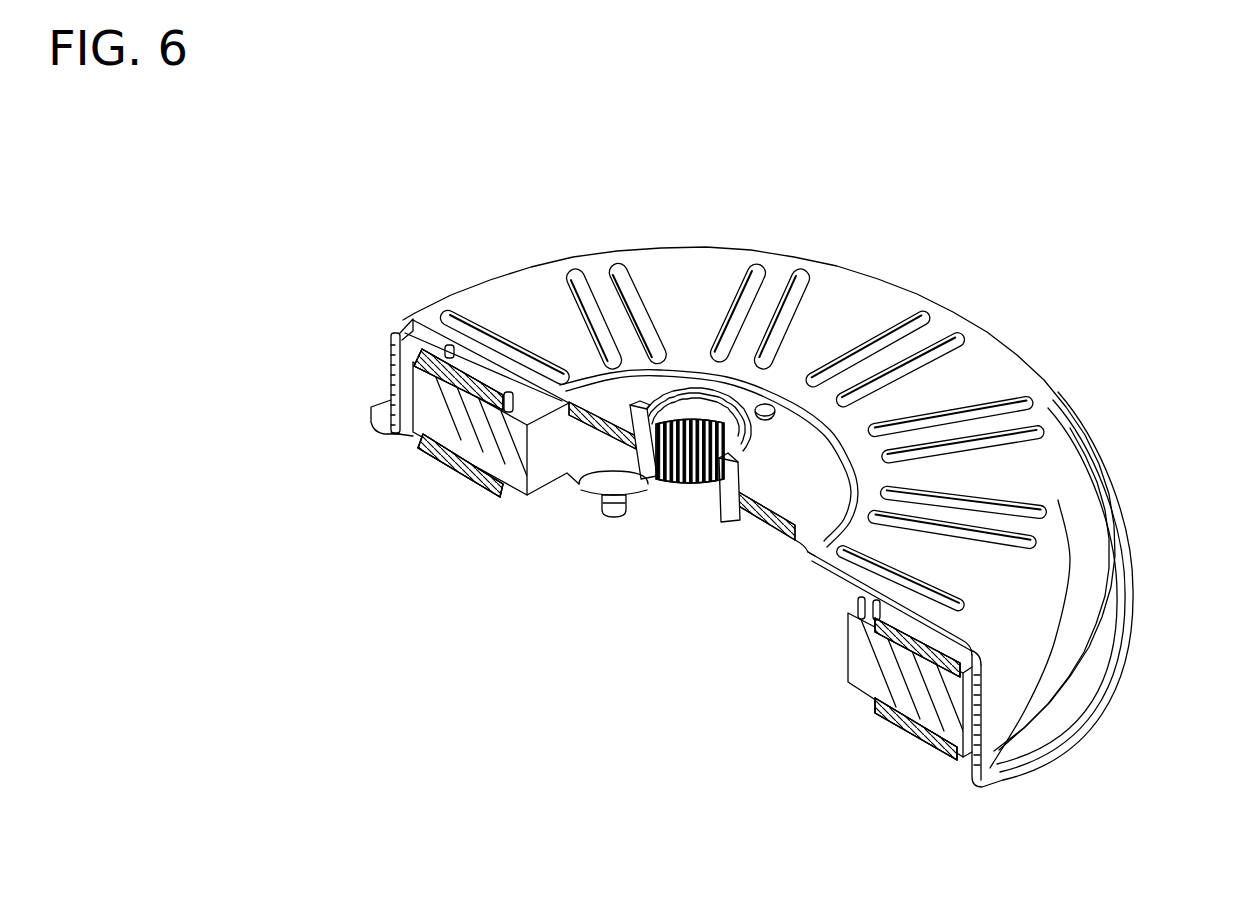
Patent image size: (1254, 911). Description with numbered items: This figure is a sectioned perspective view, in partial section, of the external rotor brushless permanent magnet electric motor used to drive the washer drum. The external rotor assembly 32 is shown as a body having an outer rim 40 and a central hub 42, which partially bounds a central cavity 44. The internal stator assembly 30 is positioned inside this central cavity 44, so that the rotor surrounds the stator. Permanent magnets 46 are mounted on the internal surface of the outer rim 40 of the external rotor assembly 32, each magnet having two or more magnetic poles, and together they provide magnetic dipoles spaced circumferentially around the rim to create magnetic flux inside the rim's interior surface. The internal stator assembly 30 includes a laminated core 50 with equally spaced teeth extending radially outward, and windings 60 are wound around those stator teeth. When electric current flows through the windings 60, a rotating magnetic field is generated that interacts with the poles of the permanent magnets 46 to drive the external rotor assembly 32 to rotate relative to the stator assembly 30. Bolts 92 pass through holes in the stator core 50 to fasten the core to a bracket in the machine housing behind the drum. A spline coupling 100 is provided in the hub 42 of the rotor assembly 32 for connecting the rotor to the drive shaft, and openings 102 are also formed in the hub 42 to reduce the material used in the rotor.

The internal stator assembly 30 is at (860, 697).
The external rotor assembly 32 is at (992, 318).
The outer rim 40 is at (1108, 572).
The central hub 42 is at (720, 520).
The central cavity 44 is at (569, 402).
The permanent magnets 46 is at (972, 775).
The laminated core 50 is at (848, 652).
The windings 60 is at (915, 733).
The bolts 92 is at (650, 500).
The spline coupling 100 is at (738, 410).
The openings 102 is at (1030, 428).